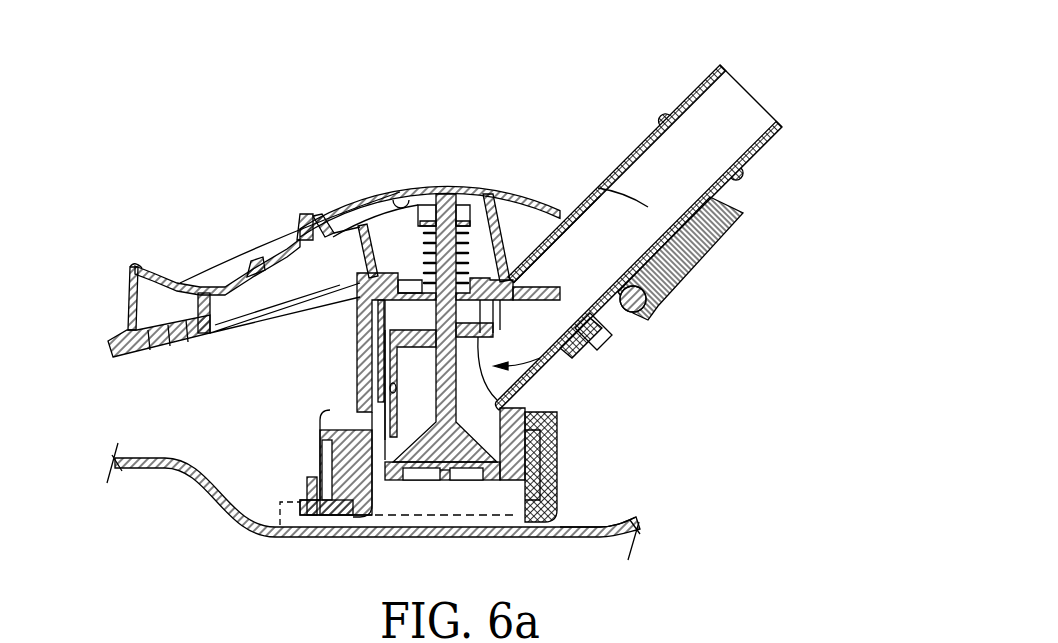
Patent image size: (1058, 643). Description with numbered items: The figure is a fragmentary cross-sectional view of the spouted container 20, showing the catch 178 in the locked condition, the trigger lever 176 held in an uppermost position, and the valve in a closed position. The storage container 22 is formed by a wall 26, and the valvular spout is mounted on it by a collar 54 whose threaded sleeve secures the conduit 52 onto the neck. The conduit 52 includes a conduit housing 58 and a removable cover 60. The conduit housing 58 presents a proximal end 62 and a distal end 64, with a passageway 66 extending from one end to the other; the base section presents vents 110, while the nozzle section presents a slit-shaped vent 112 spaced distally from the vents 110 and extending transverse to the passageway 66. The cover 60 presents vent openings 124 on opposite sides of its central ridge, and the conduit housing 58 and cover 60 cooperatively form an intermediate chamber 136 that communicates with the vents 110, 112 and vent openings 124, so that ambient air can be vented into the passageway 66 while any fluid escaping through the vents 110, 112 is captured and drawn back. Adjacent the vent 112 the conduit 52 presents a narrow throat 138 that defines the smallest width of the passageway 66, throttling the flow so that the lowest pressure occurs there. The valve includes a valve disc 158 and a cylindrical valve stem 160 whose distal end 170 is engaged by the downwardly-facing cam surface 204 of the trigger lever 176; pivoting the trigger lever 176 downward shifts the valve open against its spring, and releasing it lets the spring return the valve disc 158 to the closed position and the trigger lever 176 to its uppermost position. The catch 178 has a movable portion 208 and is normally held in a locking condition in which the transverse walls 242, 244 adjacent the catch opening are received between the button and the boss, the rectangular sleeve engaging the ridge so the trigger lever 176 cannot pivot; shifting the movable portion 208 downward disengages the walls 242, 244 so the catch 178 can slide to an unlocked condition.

The spouted container 20 is at (370, 201).
The storage container 22 is at (136, 458).
The wall 26 is at (608, 525).
The conduit 52 is at (702, 82).
The collar 54 is at (560, 466).
The conduit housing 58 is at (652, 128).
The cover 60 is at (356, 312).
The proximal end 62 is at (478, 488).
The distal end 64 is at (644, 205).
The passageway 66 is at (602, 194).
The vents 110 is at (372, 378).
The vent 112 is at (493, 313).
The vent openings 124 is at (354, 343).
The intermediate chamber 136 is at (356, 388).
The throat 138 is at (548, 362).
The valve disc 158 is at (420, 482).
The valve stem 160 is at (500, 402).
The distal end 170 is at (447, 185).
The trigger lever 176 is at (487, 196).
The catch 178 is at (243, 307).
The cam surface 204 is at (392, 196).
The movable portion 208 is at (227, 284).
The transverse wall 242 is at (296, 215).
The transverse wall 244 is at (312, 214).